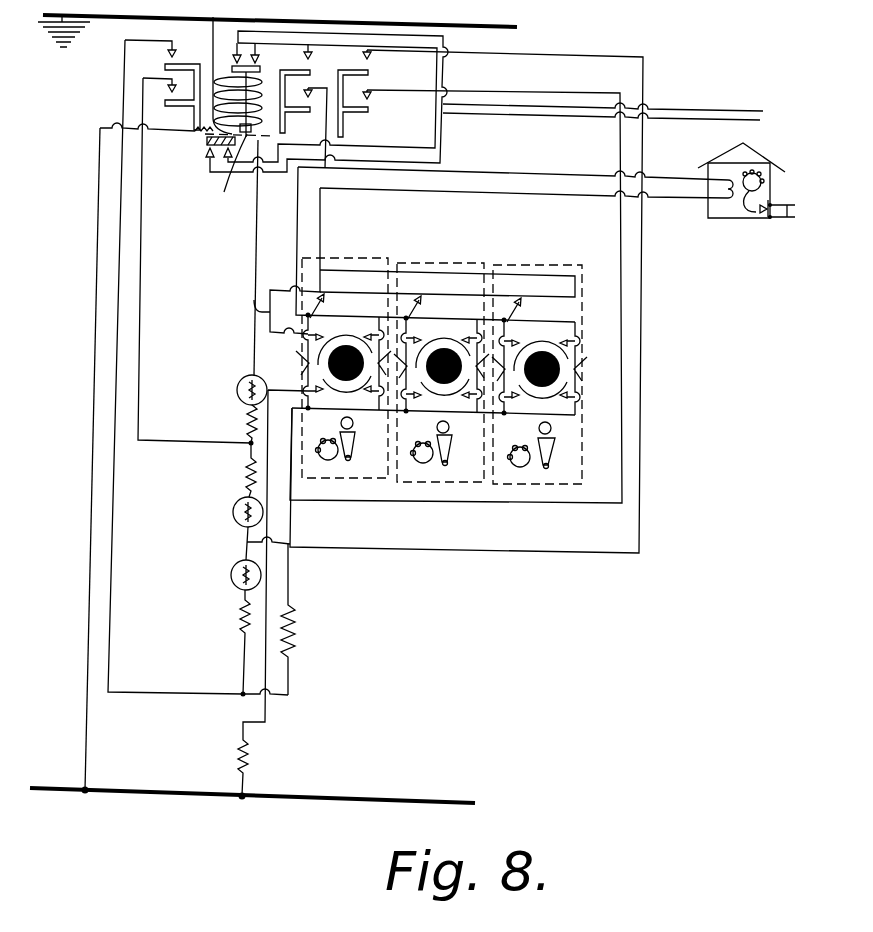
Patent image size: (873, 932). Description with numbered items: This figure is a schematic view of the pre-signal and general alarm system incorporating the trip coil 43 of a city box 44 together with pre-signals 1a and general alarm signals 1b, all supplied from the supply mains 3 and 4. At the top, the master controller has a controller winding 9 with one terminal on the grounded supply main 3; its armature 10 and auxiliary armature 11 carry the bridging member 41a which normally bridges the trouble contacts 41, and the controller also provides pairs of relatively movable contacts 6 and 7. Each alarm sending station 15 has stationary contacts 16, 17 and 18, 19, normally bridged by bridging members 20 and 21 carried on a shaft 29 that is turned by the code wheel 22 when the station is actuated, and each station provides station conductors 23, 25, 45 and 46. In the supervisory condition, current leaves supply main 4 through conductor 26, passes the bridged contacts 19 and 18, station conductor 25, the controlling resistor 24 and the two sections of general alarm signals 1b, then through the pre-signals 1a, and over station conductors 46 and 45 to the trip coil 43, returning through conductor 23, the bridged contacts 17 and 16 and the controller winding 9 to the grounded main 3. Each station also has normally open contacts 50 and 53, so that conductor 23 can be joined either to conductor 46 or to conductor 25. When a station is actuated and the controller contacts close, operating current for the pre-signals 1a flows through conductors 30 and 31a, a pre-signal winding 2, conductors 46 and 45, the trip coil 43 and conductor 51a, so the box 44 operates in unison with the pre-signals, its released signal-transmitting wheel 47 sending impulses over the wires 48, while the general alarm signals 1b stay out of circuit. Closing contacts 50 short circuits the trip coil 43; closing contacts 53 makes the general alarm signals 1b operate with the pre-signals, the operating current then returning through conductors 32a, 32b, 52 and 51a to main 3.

The supply main 3 is at (362, 23).
The supply main 4 is at (283, 797).
The operating winding 2 is at (240, 580).
The pre-signals 1a is at (247, 400).
The general alarm signals 1b is at (243, 562).
The controller contacts 6 is at (338, 118).
The controller contacts 7 is at (362, 57).
The controller winding 9 is at (213, 120).
The armature 10 is at (207, 142).
The auxiliary armature 11 is at (235, 165).
The alarm sending station 15 is at (572, 268).
The stationary contact 16 is at (523, 348).
The stationary contact 17 is at (565, 347).
The stationary contact 18 is at (372, 395).
The stationary contact 19 is at (343, 395).
The bridging member 20 is at (548, 352).
The bridging member 21 is at (550, 397).
The code wheel 22 is at (522, 465).
The station conductor 23 is at (541, 321).
The controlling resistor 24 is at (288, 647).
The station conductor 25 is at (560, 422).
The conductor 26 is at (267, 600).
The shaft 29 is at (354, 421).
The conductor 30 is at (88, 658).
The conductor 31a is at (140, 287).
The conductor 32a is at (443, 560).
The conductor 32b is at (640, 505).
The trouble contacts 41 is at (240, 58).
The bridging member 41a is at (230, 66).
The trip coil 43 is at (728, 218).
The city box 44 is at (742, 215).
The station conductor 45 is at (427, 272).
The station conductor 46 is at (448, 315).
The signal-transmitting wheel 47 is at (765, 183).
The wires 48 is at (781, 221).
The contacts 50 is at (327, 300).
The conductor 51a is at (330, 142).
The conductor 52 is at (380, 512).
The contacts 53 is at (302, 362).